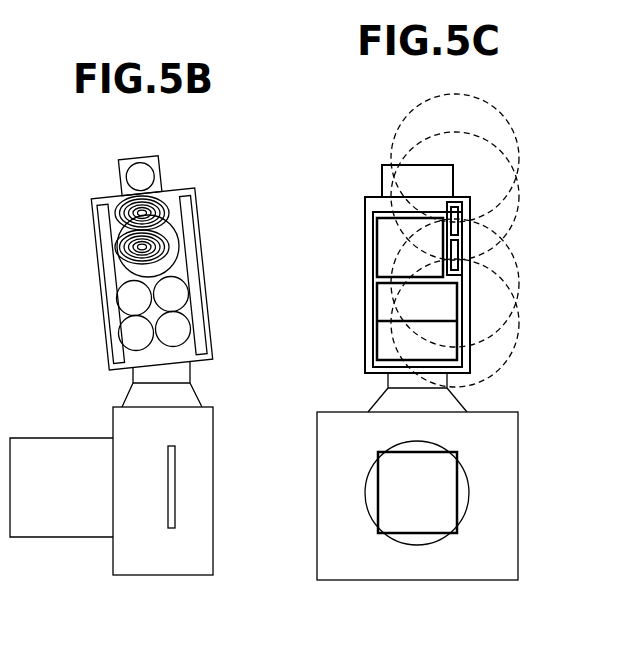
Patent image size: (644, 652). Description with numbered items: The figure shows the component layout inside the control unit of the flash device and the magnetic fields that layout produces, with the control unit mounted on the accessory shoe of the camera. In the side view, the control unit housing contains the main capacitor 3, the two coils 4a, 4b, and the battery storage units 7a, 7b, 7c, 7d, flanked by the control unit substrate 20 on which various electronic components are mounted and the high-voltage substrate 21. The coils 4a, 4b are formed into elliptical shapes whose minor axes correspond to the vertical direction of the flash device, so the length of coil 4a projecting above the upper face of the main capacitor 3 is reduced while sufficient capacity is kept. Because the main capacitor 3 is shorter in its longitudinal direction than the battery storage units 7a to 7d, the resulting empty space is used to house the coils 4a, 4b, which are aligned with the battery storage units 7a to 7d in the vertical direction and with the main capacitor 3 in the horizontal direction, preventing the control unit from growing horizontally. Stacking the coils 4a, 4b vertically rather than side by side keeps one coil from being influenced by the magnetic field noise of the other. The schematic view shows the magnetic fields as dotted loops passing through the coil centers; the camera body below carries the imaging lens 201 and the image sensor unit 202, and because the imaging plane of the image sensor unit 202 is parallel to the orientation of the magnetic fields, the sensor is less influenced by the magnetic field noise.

The main capacitor 3 is at (180, 260).
The coil 4a is at (168, 200).
The coil 4b is at (118, 244).
The battery storage unit 7a is at (128, 305).
The battery storage unit 7b is at (130, 337).
The battery storage unit 7c is at (180, 293).
The battery storage unit 7d is at (182, 330).
The control unit substrate 20 is at (190, 222).
The high-voltage substrate 21 is at (100, 273).
The imaging lens 201 is at (53, 523).
The image sensor unit 202 is at (175, 485).